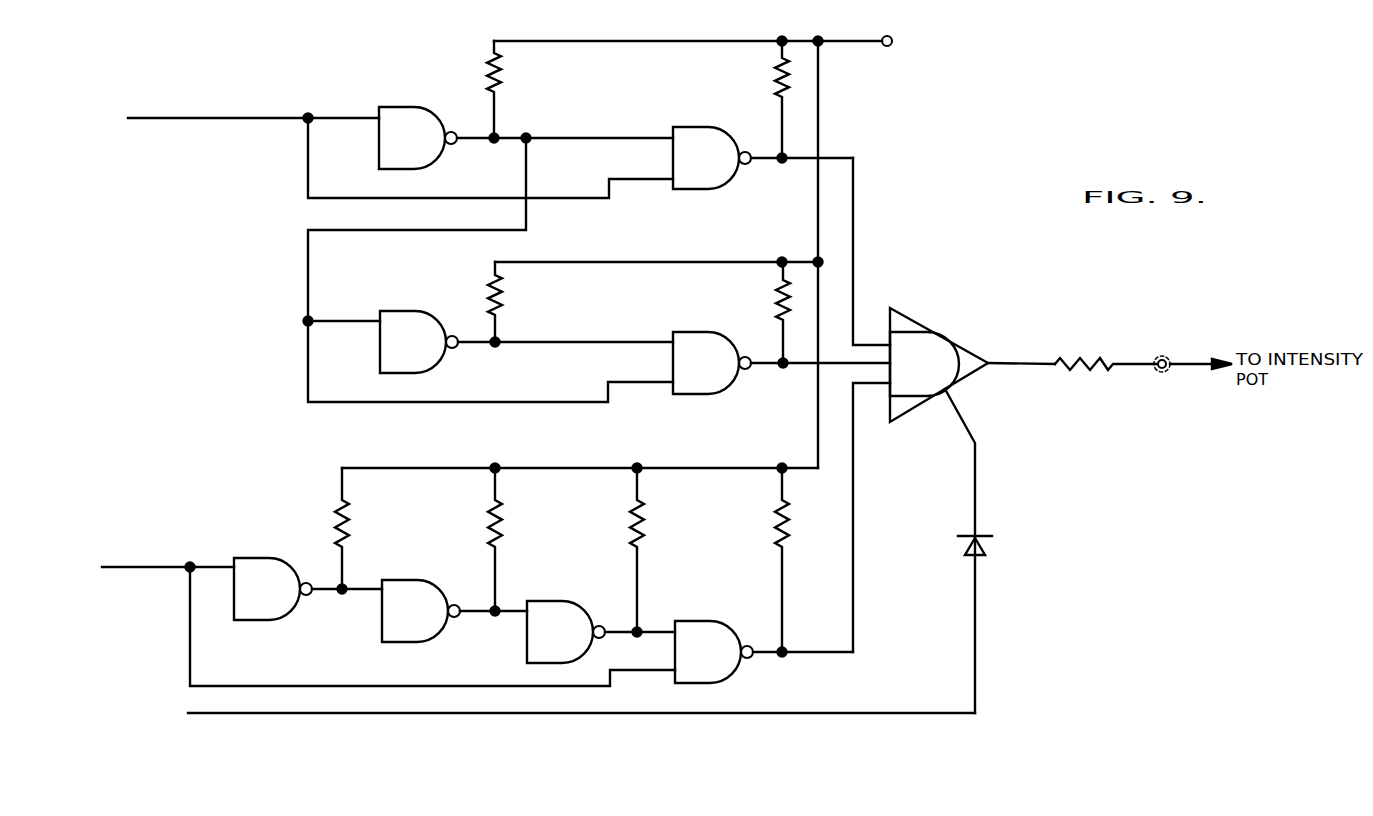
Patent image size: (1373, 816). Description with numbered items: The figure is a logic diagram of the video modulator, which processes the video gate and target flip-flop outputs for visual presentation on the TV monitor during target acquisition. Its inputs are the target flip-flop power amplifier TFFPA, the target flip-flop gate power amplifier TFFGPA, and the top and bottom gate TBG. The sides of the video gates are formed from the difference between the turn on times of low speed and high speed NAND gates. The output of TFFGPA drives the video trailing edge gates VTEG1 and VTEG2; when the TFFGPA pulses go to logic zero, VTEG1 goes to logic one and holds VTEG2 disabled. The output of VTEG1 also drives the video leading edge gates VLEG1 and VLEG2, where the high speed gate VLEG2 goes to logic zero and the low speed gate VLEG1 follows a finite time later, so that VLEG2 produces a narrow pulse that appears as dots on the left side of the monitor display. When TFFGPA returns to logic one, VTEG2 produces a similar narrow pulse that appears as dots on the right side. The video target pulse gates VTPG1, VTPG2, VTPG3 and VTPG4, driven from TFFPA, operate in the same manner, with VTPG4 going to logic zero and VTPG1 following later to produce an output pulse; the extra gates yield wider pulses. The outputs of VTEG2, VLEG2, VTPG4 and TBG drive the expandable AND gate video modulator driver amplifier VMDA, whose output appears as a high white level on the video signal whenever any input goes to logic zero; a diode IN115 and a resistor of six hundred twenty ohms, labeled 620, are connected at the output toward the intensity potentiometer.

The video trailing edge gate 1 VTEG1 is at (525, 105).
The video trailing edge gate 2 VTEG2 is at (762, 115).
The video leading edge gate 1 VLEG1 is at (490, 317).
The video leading edge gate 2 VLEG2 is at (781, 328).
The video target pulse gate 1 VTPG1 is at (601, 565).
The video target pulse gate 2 VTPG2 is at (453, 555).
The video target pulse gate 3 VTPG3 is at (307, 544).
The video target pulse gate 4 VTPG4 is at (764, 575).
The video modulator driver amplifier VMDA is at (972, 361).
The diode IN115 is at (996, 551).
The 620 ohm resistor 620 is at (1106, 377).
The target flip-flop gate power amplifier TFFGPA is at (253, 110).
The target flip-flop power amplifier TFFPA is at (168, 560).
The top and bottom gate TBG is at (557, 712).